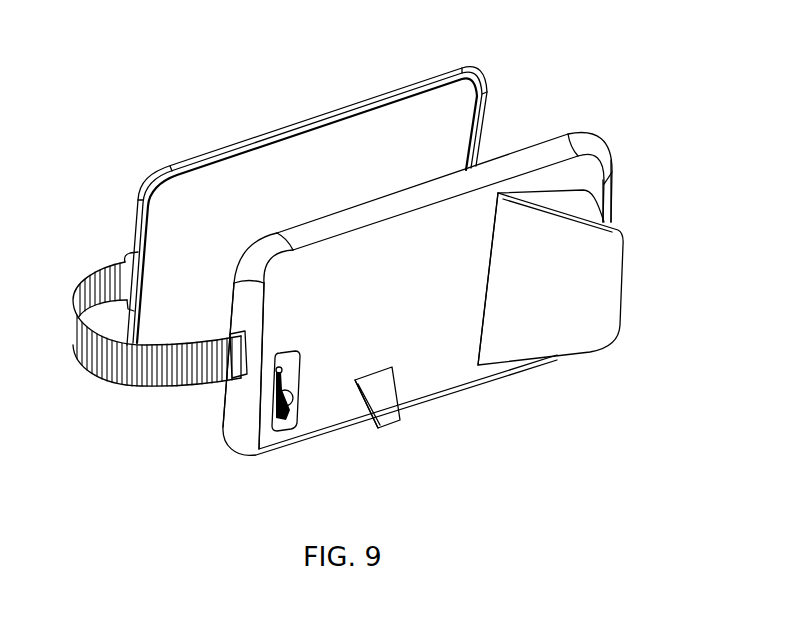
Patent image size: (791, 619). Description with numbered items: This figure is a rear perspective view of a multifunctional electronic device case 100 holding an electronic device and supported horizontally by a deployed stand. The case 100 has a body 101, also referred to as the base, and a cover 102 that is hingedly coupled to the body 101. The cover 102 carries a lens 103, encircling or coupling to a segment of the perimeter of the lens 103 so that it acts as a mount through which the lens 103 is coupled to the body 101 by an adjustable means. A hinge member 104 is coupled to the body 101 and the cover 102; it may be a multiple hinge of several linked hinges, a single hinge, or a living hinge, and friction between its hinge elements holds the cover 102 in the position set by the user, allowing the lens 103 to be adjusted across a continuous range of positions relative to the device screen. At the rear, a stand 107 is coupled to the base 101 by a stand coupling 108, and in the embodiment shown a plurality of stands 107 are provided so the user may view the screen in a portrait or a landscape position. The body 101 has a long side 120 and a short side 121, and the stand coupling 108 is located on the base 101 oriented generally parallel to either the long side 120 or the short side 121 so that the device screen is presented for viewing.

The case 100 is at (730, 86).
The body 101 is at (410, 275).
The cover 102 is at (305, 122).
The lens 103 is at (231, 220).
The hinge member 104 is at (104, 368).
The stand 107 is at (563, 286).
The stand coupling 108 is at (375, 372).
The long side 120 is at (514, 158).
The short side 121 is at (607, 203).